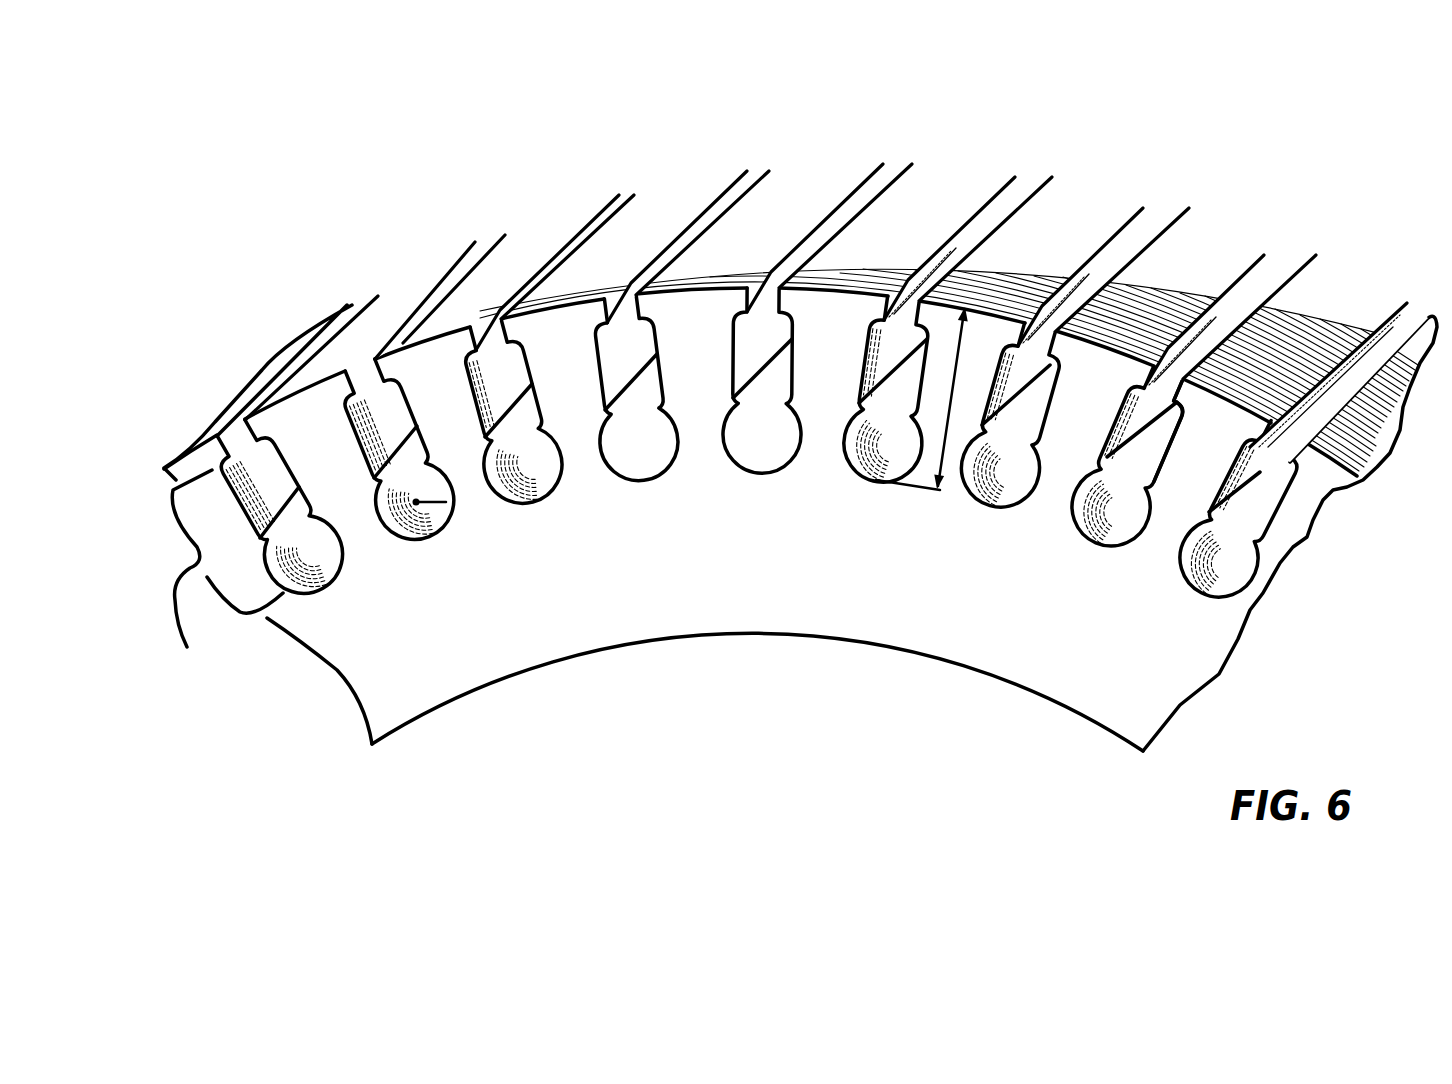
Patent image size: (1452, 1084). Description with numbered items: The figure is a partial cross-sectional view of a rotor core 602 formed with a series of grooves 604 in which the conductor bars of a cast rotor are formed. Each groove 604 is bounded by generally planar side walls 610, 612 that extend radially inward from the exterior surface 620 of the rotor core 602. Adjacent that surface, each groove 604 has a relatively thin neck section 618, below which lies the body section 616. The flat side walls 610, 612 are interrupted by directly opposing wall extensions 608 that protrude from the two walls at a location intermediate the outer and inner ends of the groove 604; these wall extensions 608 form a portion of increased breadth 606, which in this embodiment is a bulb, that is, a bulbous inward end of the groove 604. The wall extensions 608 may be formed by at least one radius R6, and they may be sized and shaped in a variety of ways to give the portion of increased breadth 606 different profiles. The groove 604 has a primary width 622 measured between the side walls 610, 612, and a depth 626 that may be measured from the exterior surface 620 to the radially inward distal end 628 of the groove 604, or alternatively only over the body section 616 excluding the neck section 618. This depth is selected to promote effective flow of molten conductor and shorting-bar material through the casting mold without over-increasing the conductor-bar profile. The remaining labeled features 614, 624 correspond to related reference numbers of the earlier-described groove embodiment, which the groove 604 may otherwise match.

The rotor core 602 is at (567, 621).
The groove 604 is at (697, 207).
The portion of increased breadth 606 is at (368, 565).
The wall extension 608 is at (352, 462).
The side wall 610 is at (1085, 444).
The side wall 612 is at (1170, 482).
The slot root circle 614 is at (692, 437).
The body section 616 is at (210, 577).
The neck section 618 is at (208, 443).
The exterior surface 620 is at (397, 285).
The primary width 622 is at (545, 399).
The slot pocket 624 is at (826, 460).
The depth 626 is at (957, 497).
The radially-inward distal end 628 is at (763, 485).
The radius R6 is at (416, 502).